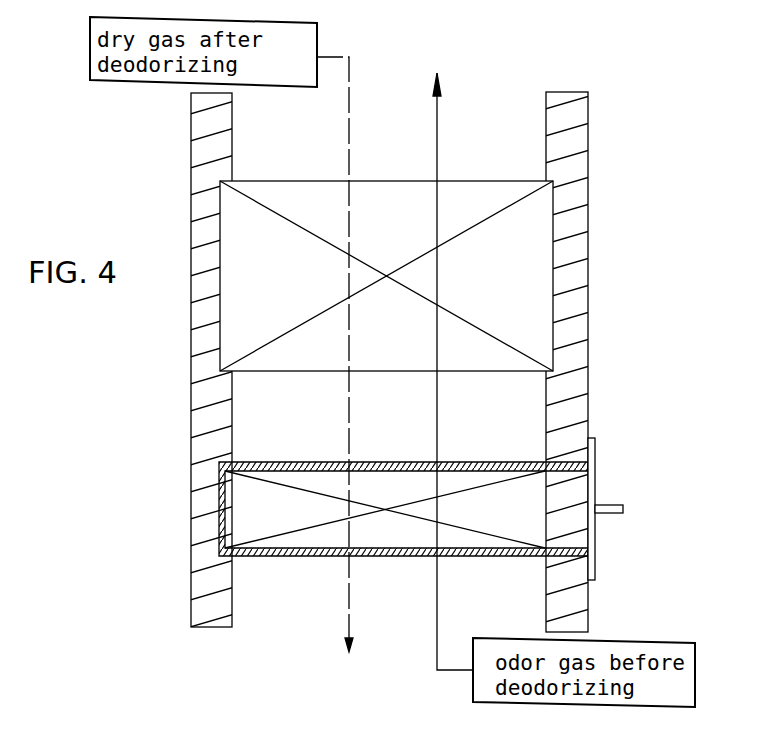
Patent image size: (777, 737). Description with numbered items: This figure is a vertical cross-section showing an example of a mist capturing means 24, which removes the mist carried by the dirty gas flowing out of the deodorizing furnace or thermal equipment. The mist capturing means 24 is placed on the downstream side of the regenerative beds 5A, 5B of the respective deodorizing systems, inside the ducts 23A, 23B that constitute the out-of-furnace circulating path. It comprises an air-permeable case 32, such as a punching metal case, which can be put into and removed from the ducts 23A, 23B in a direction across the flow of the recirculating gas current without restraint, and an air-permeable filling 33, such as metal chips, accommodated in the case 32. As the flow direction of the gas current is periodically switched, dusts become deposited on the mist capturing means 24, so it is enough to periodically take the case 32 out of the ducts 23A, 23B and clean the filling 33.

The regenerative bed 5A is at (466, 276).
The regenerative bed 5B is at (520, 290).
The duct 23A is at (459, 361).
The duct 23B is at (573, 351).
The mist capturing means 24 is at (467, 487).
The air-permeable case 32 is at (498, 463).
The air-permeable filling 33 is at (512, 510).